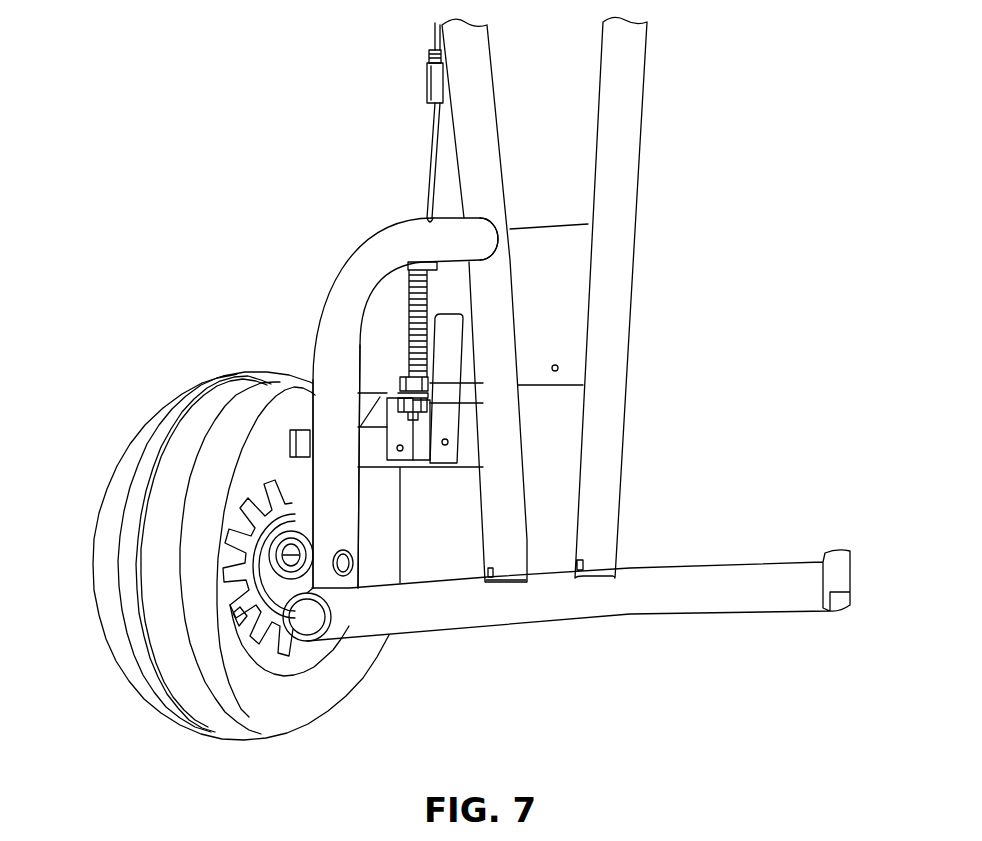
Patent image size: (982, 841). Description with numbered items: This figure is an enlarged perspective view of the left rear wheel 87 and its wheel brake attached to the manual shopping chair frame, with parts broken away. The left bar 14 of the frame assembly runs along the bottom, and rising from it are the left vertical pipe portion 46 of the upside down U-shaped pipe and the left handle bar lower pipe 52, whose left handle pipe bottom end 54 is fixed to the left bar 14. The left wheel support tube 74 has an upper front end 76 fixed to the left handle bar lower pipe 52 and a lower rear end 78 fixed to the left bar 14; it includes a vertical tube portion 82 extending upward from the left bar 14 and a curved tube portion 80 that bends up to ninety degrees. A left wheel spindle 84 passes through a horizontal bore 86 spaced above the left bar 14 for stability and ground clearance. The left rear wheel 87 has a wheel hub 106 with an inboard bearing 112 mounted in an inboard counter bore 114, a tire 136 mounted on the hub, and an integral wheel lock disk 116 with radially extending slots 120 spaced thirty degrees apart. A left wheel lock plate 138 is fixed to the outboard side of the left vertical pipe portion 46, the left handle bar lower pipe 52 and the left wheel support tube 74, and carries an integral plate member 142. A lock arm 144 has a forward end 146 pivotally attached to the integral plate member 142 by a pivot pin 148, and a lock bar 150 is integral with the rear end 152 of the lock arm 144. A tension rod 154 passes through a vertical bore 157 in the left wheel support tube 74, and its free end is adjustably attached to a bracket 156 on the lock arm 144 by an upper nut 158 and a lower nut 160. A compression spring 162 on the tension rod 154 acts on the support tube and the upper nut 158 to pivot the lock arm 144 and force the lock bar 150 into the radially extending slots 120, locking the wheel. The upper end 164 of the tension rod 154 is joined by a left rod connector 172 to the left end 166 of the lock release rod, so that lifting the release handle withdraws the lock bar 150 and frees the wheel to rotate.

The left bar 14 is at (597, 614).
The left vertical pipe portion 46 is at (647, 100).
The left handle bar lower pipe 52 is at (488, 72).
The left handle pipe bottom end 54 is at (505, 583).
The left wheel support tube 74 is at (396, 355).
The upper front end 76 is at (473, 232).
The lower rear end 78 is at (337, 592).
The curved tube portion 80 is at (340, 268).
The vertical tube portion 82 is at (312, 356).
The left wheel spindle 84 is at (290, 572).
The horizontal bore 86 is at (355, 562).
The left rear wheel 87 is at (150, 402).
The wheel hub 106 is at (277, 677).
The inboard bearing 112 is at (291, 558).
The inboard counter bore 114 is at (270, 548).
The wheel lock disk 116 is at (247, 502).
The radially extending slots 120 is at (240, 622).
The tire 136 is at (330, 713).
The left wheel lock plate 138 is at (545, 227).
The integral plate member 142 is at (460, 433).
The lock arm 144 is at (370, 427).
The forward end 146 is at (430, 455).
The pivot pin 148 is at (450, 455).
The lock bar 150 is at (292, 440).
The rear end 152 is at (287, 447).
The tension rod 154 is at (432, 145).
The bracket 156 is at (400, 462).
The vertical bore 157 is at (428, 220).
The upper nut 158 is at (428, 383).
The lower nut 160 is at (430, 403).
The compression spring 162 is at (430, 302).
The upper end 164 is at (428, 108).
The left end 166 is at (437, 40).
The left rod connector 172 is at (428, 80).